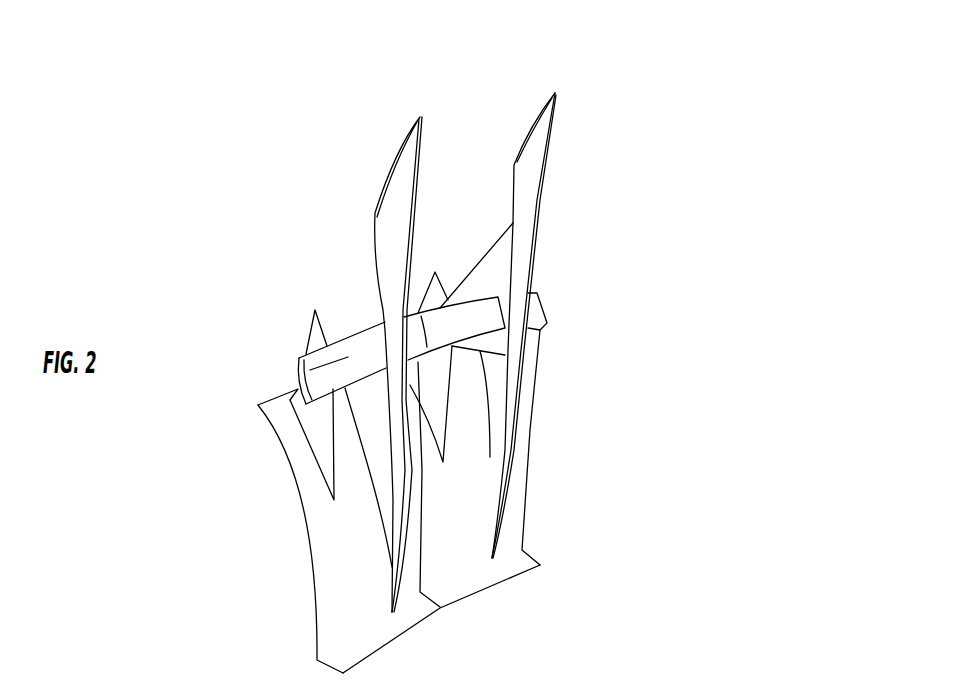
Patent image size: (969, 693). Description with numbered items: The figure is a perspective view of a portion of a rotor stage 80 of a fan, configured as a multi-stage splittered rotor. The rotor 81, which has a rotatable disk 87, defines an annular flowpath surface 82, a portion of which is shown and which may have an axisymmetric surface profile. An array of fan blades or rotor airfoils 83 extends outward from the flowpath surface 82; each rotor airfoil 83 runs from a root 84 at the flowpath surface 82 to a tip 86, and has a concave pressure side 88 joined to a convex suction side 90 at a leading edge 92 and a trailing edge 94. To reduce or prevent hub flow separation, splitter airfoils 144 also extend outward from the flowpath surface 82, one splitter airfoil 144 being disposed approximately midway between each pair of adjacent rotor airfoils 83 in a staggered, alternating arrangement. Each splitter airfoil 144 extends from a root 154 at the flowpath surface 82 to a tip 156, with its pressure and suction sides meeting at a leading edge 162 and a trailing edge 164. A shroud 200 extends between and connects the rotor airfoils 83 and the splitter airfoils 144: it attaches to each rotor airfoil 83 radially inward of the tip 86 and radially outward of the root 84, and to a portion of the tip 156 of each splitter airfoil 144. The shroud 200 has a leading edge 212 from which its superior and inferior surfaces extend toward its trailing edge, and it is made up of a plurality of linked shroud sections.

The rotor stage 80 is at (624, 78).
The rotor 81 is at (252, 531).
The rotatable disk 87 is at (252, 531).
The flowpath surface 82 is at (465, 577).
The rotor airfoil 83 is at (395, 168).
The root 84 is at (385, 537).
The tip 86 is at (420, 116).
The pressure side 88 is at (496, 356).
The suction side 90 is at (548, 176).
The leading edge 92 is at (523, 355).
The trailing edge 94 is at (505, 243).
The splitter airfoil 144 is at (311, 318).
The root 154 is at (300, 437).
The tip 156 is at (323, 317).
The leading edge 162 is at (333, 467).
The trailing edge 164 is at (307, 347).
The shroud 200 is at (300, 378).
The leading edge 212 is at (543, 328).